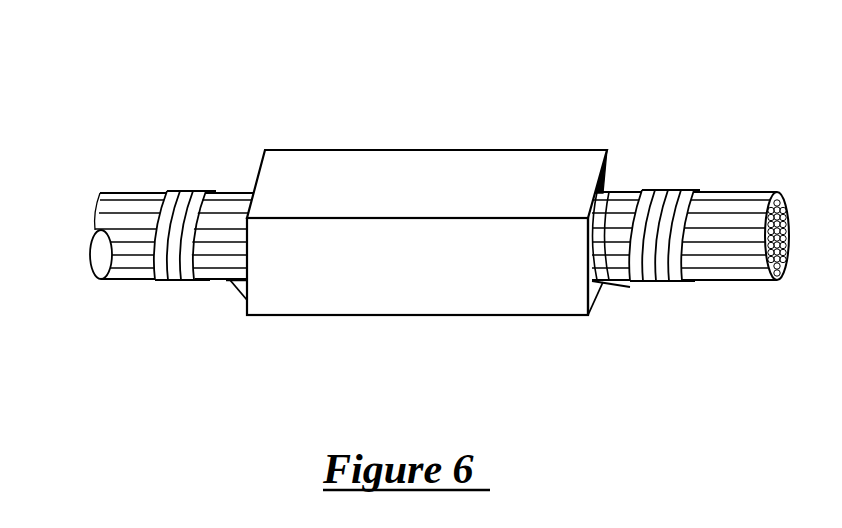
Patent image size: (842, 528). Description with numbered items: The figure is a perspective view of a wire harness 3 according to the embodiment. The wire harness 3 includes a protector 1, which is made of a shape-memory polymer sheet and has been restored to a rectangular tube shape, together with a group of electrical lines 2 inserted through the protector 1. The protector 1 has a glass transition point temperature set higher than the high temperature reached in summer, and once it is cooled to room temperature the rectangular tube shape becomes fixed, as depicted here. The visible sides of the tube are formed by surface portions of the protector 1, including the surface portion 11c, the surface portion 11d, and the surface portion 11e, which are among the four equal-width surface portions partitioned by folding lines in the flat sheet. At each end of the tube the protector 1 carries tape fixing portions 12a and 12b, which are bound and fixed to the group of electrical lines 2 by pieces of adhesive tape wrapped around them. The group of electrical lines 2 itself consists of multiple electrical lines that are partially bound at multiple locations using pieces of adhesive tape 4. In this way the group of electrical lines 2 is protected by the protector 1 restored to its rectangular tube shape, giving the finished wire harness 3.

The protector 1 is at (500, 149).
The group of electrical lines 2 is at (737, 192).
The wire harness 3 is at (187, 78).
The adhesive tape 4 is at (608, 186).
The surface portion 11c is at (597, 298).
The surface portion 11d is at (399, 300).
The surface portion 11e is at (389, 162).
The tape fixing portion 12a is at (226, 283).
The tape fixing portion 12b is at (613, 284).